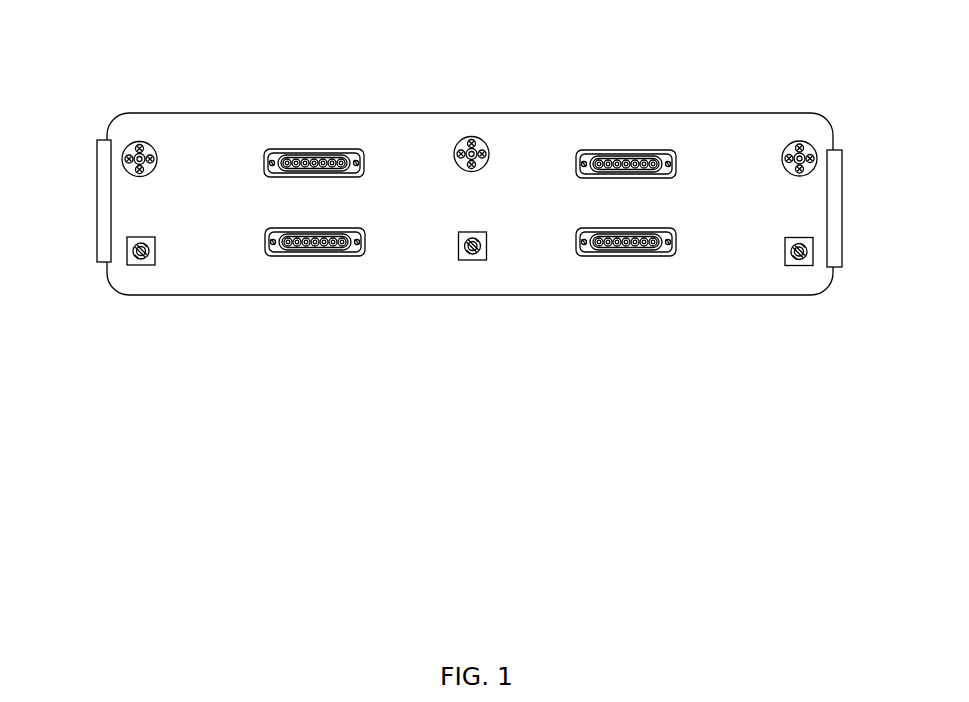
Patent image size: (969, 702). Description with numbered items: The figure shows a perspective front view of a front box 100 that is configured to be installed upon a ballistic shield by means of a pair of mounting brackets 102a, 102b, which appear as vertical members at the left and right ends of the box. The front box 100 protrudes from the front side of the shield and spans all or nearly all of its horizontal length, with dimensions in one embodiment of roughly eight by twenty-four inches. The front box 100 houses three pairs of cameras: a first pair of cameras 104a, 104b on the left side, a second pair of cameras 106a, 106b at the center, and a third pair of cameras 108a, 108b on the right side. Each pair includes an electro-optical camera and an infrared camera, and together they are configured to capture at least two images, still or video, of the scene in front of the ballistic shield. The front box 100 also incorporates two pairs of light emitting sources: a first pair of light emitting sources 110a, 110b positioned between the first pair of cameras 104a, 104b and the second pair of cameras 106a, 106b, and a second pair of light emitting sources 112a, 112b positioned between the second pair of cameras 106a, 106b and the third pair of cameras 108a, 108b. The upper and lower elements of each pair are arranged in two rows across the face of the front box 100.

The front box 100 is at (443, 54).
The mounting bracket 102a is at (97, 176).
The mounting bracket 102b is at (845, 190).
The first pair of cameras 104a is at (127, 145).
The first pair of cameras 104b is at (124, 263).
The second pair of cameras 106a is at (478, 137).
The second pair of cameras 106b is at (459, 261).
The third pair of cameras 108a is at (813, 146).
The third pair of cameras 108b is at (808, 266).
The first pair of light emitting sources 110a is at (300, 149).
The first pair of light emitting sources 110b is at (312, 259).
The second pair of light emitting sources 112a is at (607, 150).
The second pair of light emitting sources 112b is at (618, 259).